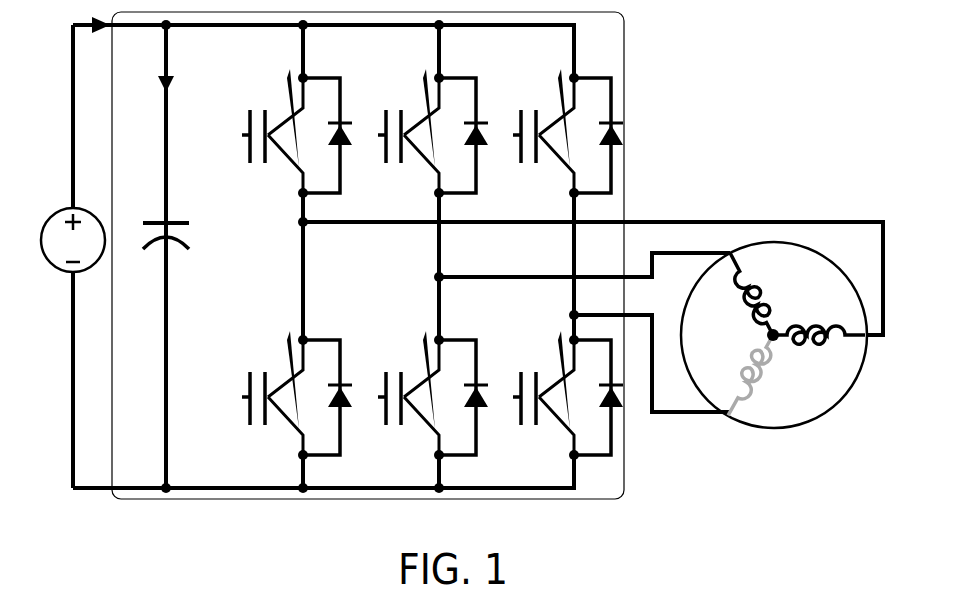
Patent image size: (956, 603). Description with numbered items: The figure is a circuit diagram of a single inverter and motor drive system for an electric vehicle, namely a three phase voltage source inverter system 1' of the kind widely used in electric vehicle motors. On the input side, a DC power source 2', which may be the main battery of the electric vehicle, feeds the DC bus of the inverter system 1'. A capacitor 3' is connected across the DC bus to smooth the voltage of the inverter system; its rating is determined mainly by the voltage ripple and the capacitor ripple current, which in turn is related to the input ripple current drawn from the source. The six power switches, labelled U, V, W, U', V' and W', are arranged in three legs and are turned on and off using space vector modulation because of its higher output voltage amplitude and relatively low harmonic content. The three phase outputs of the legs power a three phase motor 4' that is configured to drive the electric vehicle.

The three phase voltage source inverter system 1' is at (439, 255).
The DC power source 2' is at (58, 256).
The capacitor 3' is at (167, 219).
The three phase motor 4' is at (593, 325).